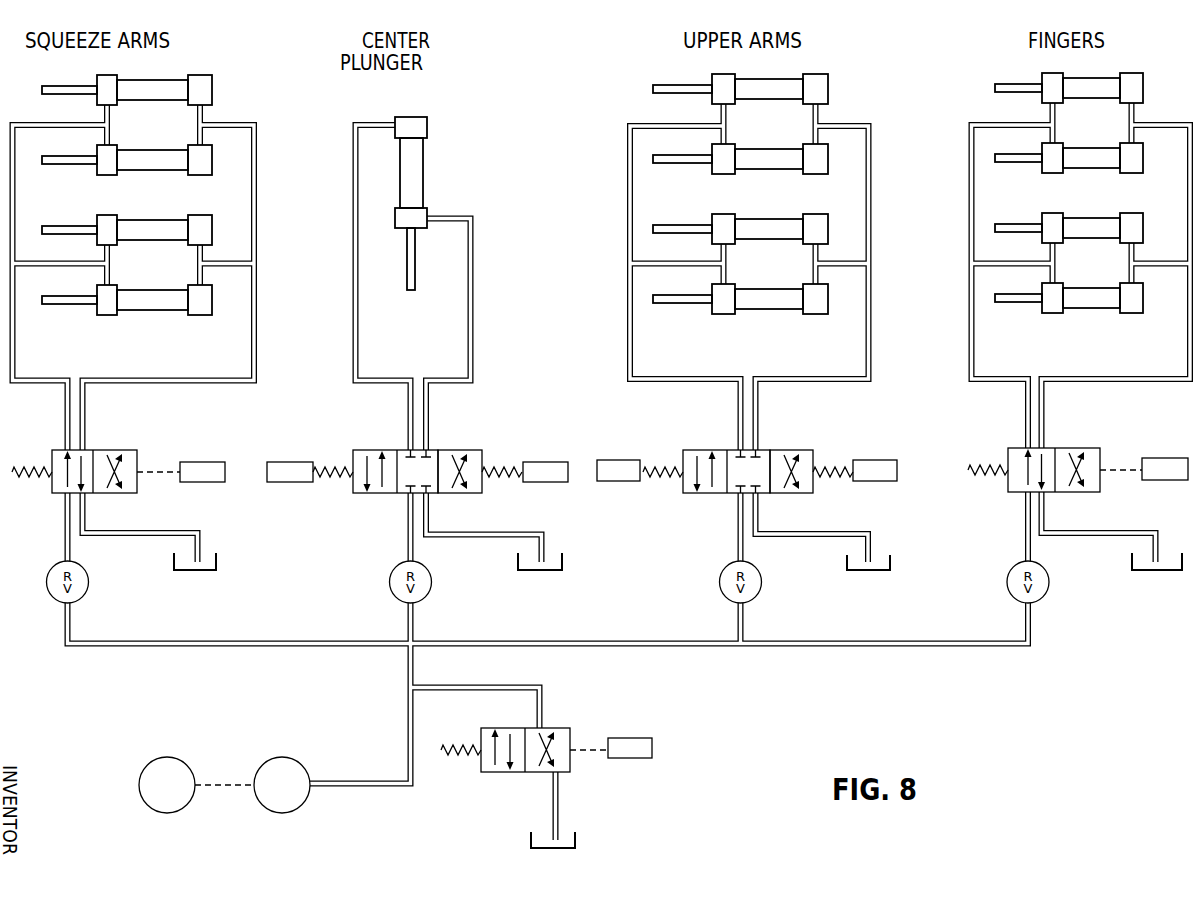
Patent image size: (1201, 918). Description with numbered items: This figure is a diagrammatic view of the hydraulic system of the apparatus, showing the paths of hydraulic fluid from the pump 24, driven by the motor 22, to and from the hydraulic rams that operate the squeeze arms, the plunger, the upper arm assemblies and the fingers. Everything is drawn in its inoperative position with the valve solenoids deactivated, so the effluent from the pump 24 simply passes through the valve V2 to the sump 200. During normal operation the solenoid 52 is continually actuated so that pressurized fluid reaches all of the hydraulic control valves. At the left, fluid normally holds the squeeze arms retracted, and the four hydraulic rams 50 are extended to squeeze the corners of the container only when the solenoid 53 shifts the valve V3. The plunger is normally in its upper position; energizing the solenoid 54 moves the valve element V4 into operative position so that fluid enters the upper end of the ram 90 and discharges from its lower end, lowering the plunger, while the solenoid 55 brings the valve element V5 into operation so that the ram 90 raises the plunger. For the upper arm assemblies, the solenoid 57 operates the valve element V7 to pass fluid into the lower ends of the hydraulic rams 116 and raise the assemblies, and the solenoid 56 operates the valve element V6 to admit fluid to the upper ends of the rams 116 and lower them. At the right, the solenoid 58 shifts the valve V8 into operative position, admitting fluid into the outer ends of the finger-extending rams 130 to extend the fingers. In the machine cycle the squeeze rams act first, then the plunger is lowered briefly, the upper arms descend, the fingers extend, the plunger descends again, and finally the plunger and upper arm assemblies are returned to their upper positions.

The motor 22 is at (162, 757).
The pump 24 is at (286, 757).
The hydraulic rams 50 is at (149, 160).
The solenoid 52 is at (640, 744).
The solenoid 53 is at (203, 462).
The solenoid 54 is at (287, 463).
The solenoid 55 is at (548, 463).
The solenoid 56 is at (873, 462).
The solenoid 57 is at (619, 462).
The solenoid 58 is at (1155, 461).
The hydraulic ram 90 is at (417, 180).
The hydraulic rams 116 is at (769, 162).
The finger-extending rams 130 is at (1090, 159).
The sump 200 is at (578, 838).
The valve V2 is at (547, 728).
The valve V3 is at (113, 450).
The valve element V4 is at (373, 450).
The valve element V5 is at (460, 450).
The valve element V6 is at (795, 450).
The valve element V7 is at (707, 450).
The valve V8 is at (1074, 449).